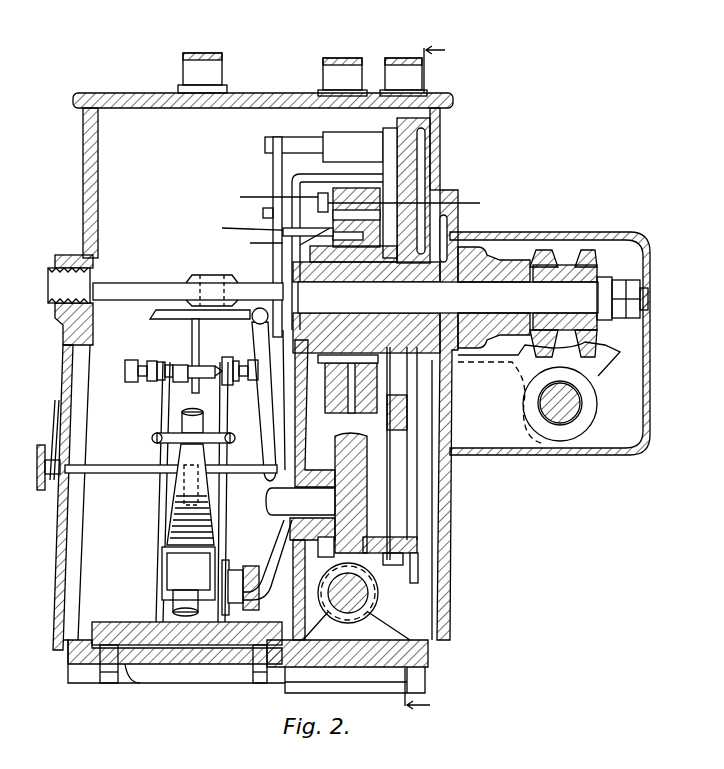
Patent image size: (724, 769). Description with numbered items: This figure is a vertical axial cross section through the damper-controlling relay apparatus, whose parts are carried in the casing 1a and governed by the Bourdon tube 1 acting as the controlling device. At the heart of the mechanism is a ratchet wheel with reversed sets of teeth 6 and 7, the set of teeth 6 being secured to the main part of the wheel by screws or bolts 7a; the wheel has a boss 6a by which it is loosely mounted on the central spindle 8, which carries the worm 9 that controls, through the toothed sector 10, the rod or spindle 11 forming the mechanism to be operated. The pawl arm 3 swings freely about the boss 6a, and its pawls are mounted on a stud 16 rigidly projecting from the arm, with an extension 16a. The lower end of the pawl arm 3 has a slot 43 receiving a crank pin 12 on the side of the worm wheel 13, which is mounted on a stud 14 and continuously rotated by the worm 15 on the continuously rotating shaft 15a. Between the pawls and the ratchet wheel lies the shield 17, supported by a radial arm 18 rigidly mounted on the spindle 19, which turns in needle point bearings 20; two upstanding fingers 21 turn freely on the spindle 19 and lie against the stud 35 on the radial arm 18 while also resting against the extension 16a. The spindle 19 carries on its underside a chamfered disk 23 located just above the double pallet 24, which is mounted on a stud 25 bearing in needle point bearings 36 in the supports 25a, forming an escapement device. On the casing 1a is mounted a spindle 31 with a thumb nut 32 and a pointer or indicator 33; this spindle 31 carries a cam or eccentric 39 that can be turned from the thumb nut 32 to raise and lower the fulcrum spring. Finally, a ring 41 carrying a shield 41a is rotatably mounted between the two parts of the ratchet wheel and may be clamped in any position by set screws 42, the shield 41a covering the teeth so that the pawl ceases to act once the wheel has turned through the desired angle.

The Bourdon tube 1 is at (182, 420).
The casing 1a is at (62, 532).
The pawl arm 3 is at (420, 183).
The reversed set of teeth 6 is at (333, 216).
The boss 6a is at (366, 299).
The reversed set of teeth 7 is at (411, 203).
The screws or bolts 7a is at (265, 220).
The central spindle 8 is at (448, 297).
The worm 9 is at (590, 272).
The toothed sector 10 is at (612, 378).
The rod or spindle 11 is at (580, 410).
The crank pin 12 is at (407, 637).
The worm wheel 13 is at (335, 452).
The stud 14 is at (268, 545).
The worm 15 is at (345, 613).
The continuously rotating shaft 15a is at (360, 608).
The stud 16 is at (330, 135).
The extension of the stud 16a is at (335, 140).
The shield 17 is at (312, 170).
The radial arm 18 is at (280, 240).
The spindle 19 is at (150, 283).
The needle point bearings 20 is at (95, 305).
The upstanding fingers 21 is at (273, 186).
The chamfered disk 23 is at (152, 322).
The double pallet 24 is at (200, 335).
The stud 25 is at (178, 382).
The supports 25a is at (218, 522).
The spindle 31 is at (130, 475).
The thumb nut 32 is at (42, 490).
The pointer or indicator 33 is at (52, 408).
The stud 35 is at (263, 212).
The needle point bearings 36 is at (180, 352).
The cam or eccentric 39 is at (170, 498).
The ring 41 is at (306, 242).
The shield 41a is at (365, 412).
The set screws 42 is at (264, 190).
The slot 43 is at (400, 485).